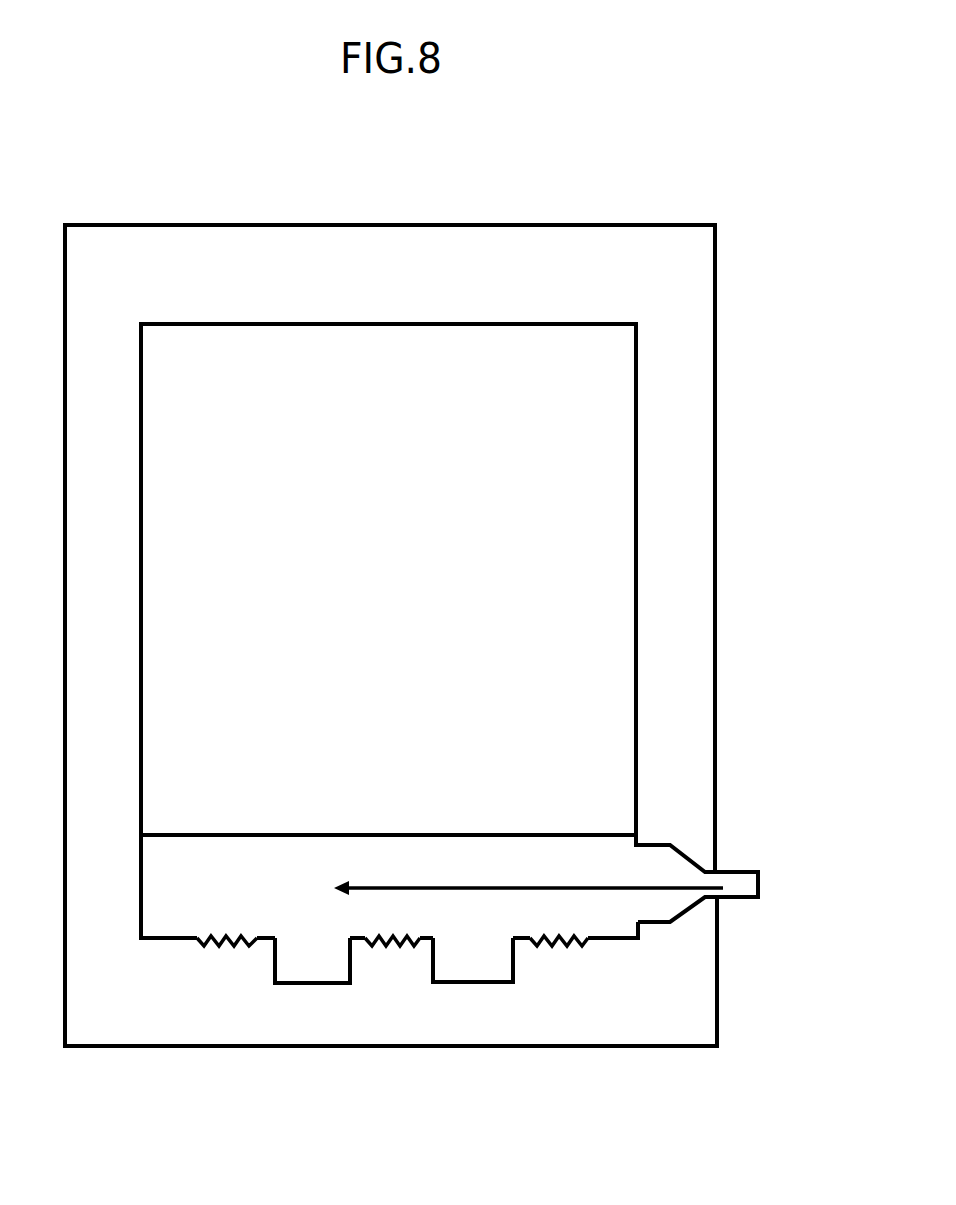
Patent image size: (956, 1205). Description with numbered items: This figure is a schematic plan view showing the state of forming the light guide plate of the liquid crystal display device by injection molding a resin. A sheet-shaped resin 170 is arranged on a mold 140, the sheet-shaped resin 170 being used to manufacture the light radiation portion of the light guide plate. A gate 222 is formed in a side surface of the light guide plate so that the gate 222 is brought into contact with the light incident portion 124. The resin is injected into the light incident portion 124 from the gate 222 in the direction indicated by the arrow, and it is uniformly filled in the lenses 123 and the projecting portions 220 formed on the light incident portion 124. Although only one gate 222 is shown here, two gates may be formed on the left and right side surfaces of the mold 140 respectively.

The mold 140 is at (547, 251).
The sheet-shaped resin 170 is at (375, 385).
The light incident portion 124 is at (318, 910).
The lenses 123 is at (558, 945).
The projecting portions 220 is at (465, 967).
The gate 222 is at (663, 899).